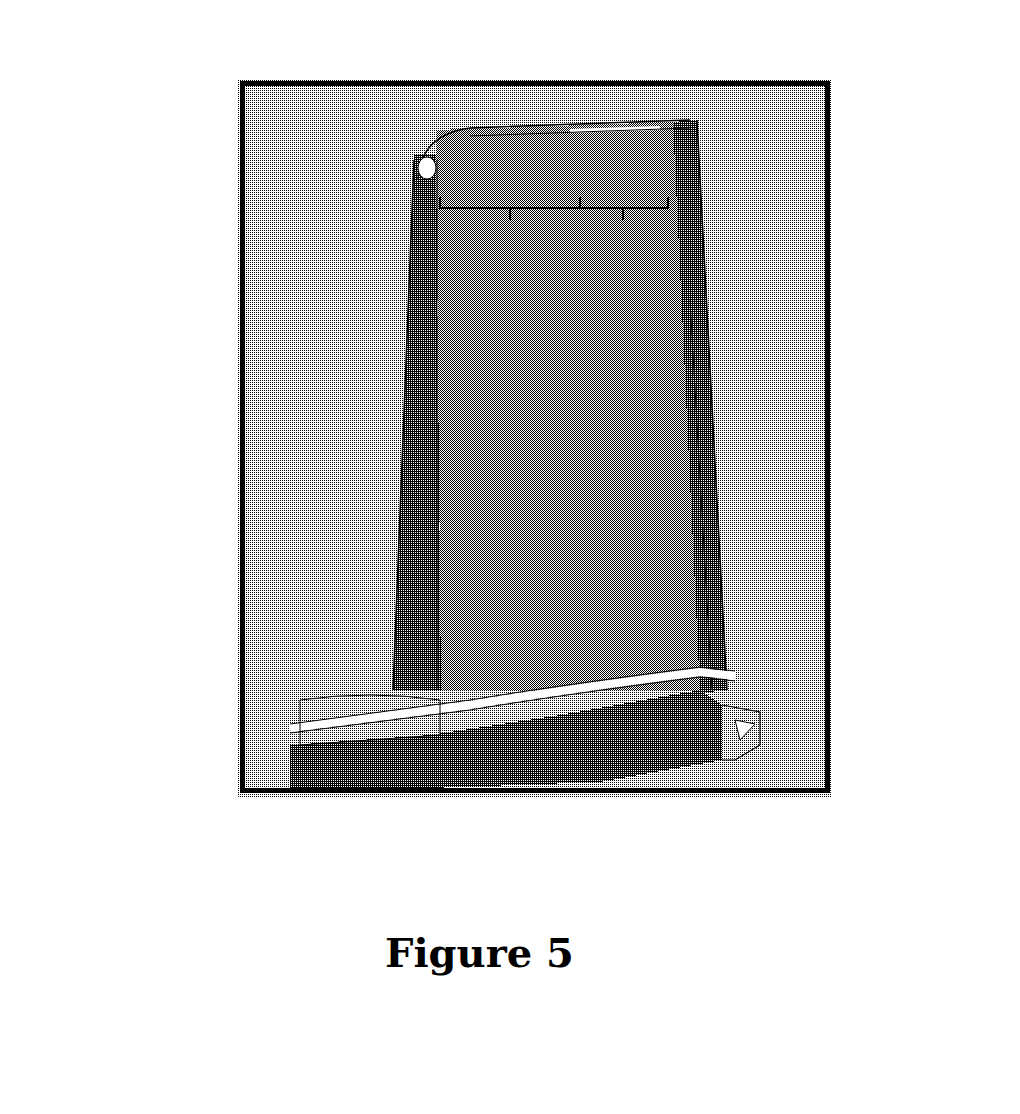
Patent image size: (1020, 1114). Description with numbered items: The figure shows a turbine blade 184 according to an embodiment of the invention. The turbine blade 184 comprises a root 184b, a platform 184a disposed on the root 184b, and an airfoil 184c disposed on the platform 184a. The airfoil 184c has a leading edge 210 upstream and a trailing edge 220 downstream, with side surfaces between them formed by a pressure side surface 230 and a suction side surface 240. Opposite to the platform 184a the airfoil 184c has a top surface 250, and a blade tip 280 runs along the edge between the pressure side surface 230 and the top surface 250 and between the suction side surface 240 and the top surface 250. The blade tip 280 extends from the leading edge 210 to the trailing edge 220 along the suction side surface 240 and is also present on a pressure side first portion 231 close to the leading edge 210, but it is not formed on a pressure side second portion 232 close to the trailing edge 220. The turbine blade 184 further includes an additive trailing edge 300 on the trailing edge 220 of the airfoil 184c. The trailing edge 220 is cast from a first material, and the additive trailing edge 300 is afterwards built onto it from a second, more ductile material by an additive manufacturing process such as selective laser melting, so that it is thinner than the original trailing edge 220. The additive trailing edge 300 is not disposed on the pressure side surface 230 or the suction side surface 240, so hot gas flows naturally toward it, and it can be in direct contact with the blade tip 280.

The turbine blade 184 is at (95, 66).
The platform 184a is at (345, 705).
The root 184b is at (575, 768).
The airfoil 184c is at (148, 153).
The leading edge 210 is at (437, 643).
The trailing edge 220 is at (700, 540).
The pressure side surface 230 is at (625, 577).
The pressure side first portion 231 is at (510, 233).
The pressure side second portion 232 is at (624, 233).
The suction side surface 240 is at (410, 522).
The top surface 250 is at (433, 155).
The blade tip 280 is at (597, 120).
The additive trailing edge 300 is at (705, 362).